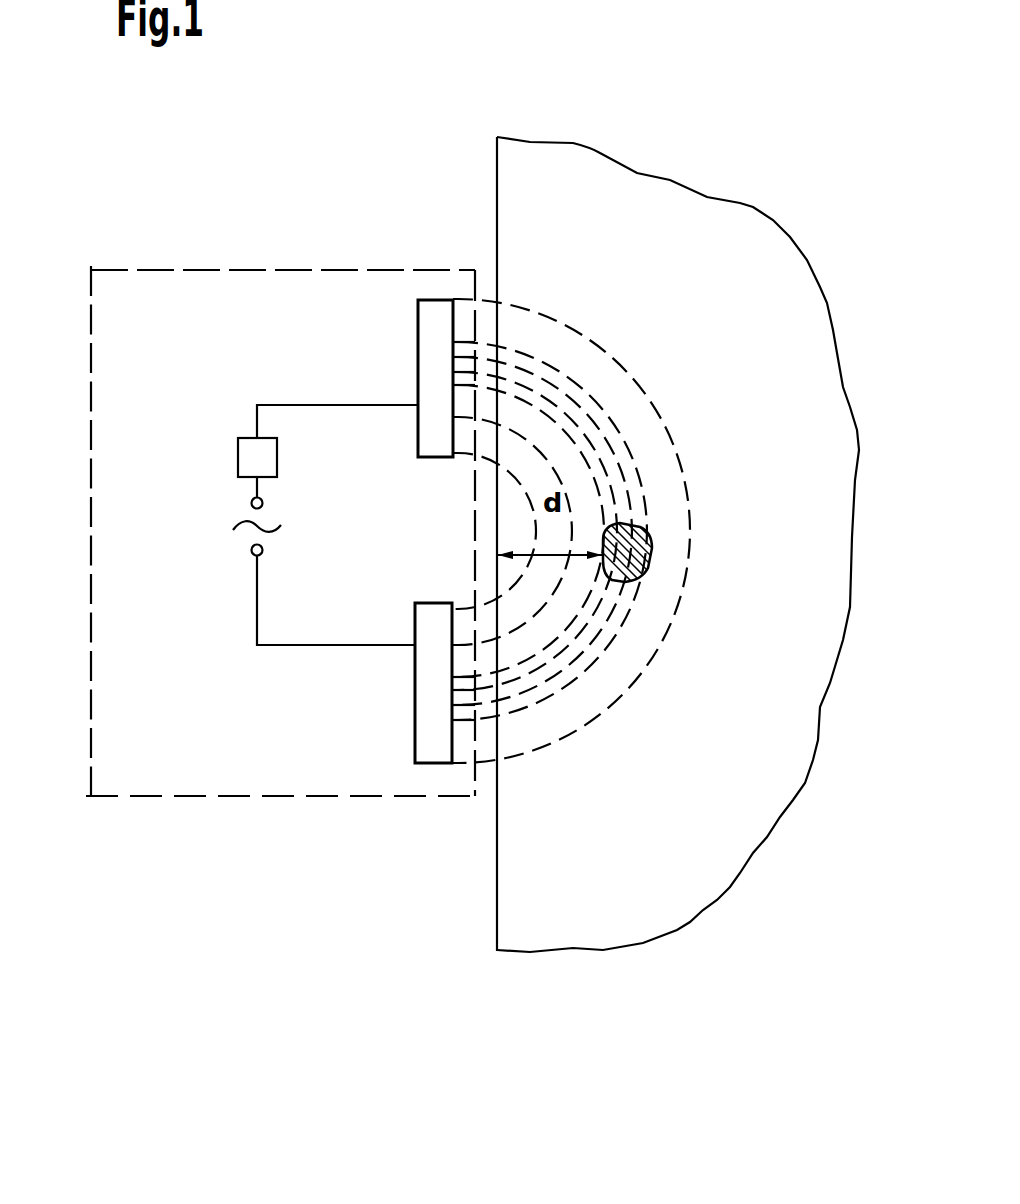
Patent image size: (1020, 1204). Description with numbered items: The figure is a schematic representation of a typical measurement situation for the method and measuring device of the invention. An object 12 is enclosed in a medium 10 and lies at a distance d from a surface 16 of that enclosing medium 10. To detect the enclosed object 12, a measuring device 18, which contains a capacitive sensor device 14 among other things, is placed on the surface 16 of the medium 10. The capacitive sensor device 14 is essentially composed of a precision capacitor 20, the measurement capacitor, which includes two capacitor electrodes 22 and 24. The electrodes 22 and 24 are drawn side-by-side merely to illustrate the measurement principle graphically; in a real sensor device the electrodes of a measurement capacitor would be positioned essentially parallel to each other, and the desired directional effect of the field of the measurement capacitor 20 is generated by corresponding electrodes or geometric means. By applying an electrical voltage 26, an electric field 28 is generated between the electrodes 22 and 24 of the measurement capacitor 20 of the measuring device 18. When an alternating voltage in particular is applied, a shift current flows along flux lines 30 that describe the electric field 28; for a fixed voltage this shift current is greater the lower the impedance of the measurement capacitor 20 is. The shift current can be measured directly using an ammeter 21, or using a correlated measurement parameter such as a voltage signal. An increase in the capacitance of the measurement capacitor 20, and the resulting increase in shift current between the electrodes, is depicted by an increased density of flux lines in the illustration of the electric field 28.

The medium 10 is at (585, 920).
The object 12 is at (660, 588).
The capacitive sensor device 14 is at (388, 680).
The surface 16 is at (494, 214).
The measuring device 18 is at (137, 770).
The precision capacitor 20 is at (421, 489).
The ammeter 21 is at (235, 452).
The capacitor electrode 22 is at (435, 317).
The capacitor electrode 24 is at (434, 747).
The electrical voltage 26 is at (247, 533).
The electric field 28 is at (576, 362).
The flux lines 30 is at (623, 453).